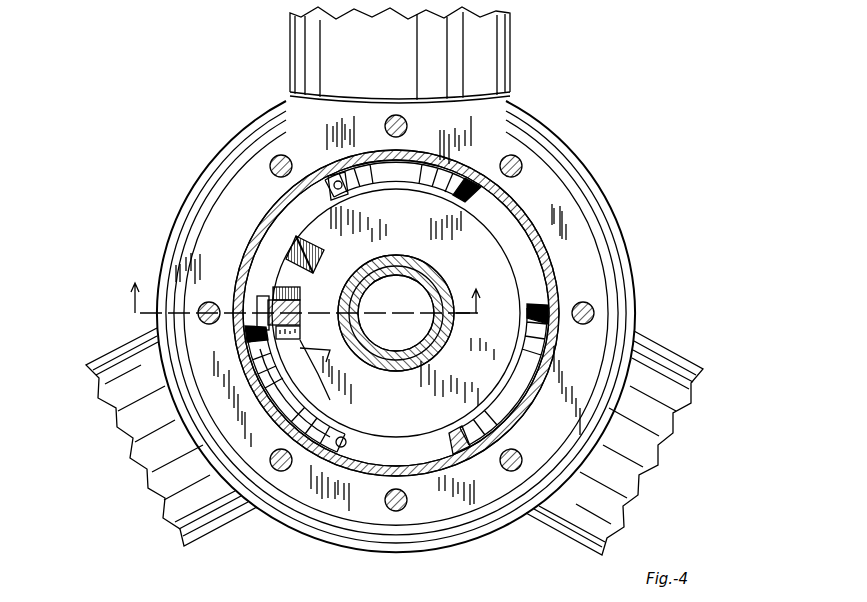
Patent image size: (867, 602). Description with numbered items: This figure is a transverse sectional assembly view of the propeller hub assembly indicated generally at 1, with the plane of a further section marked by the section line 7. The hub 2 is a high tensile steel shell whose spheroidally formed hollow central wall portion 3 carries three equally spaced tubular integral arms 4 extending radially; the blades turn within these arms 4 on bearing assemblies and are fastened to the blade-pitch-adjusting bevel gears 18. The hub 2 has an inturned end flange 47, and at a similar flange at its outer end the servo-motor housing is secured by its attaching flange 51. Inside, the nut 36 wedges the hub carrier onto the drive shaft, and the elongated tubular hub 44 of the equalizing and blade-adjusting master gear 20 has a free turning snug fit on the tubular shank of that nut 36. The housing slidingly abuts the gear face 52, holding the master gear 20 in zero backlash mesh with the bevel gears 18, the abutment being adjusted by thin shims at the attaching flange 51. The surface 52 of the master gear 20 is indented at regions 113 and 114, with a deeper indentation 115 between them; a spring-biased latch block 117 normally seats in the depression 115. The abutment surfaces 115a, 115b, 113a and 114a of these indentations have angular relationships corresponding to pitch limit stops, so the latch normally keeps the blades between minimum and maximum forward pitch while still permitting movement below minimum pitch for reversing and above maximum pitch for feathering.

The clutch assembly 1 is at (157, 193).
The hub 2 is at (357, 508).
The hollow central wall portion 3 is at (450, 545).
The tubular integral arms 4 is at (290, 60).
The inturned end flange 47 is at (592, 333).
The attaching flange 51 is at (556, 276).
The master gear 20 is at (515, 263).
The elongated tubular hub 44 is at (398, 255).
The nut 36 is at (428, 286).
The blade-pitch-adjusting bevel gears 18 is at (470, 201).
The gear face 52 is at (516, 335).
The indented region 113 is at (303, 265).
The abutment surface 113a is at (300, 240).
The deeper indentation 115 is at (300, 296).
The abutment surface 115a is at (266, 296).
The latch block 117 is at (300, 316).
The abutment surface 115b is at (298, 338).
The indented region 114 is at (310, 357).
The abutment surface 114a is at (330, 380).
The section line 7- 7 is at (301, 298).